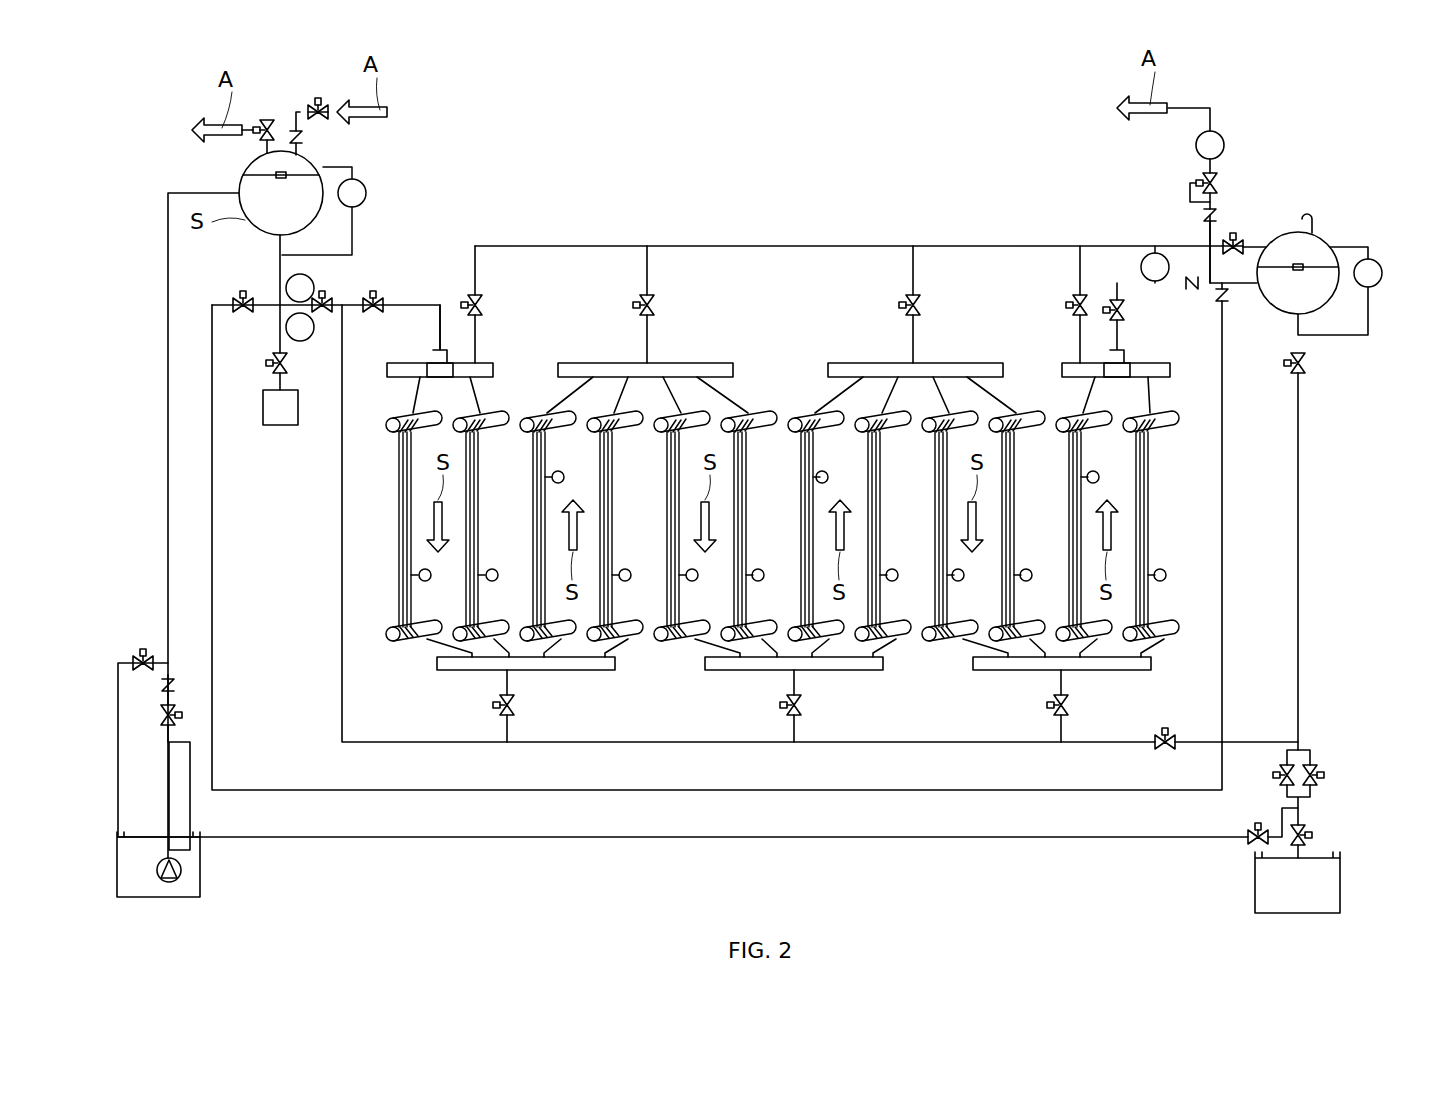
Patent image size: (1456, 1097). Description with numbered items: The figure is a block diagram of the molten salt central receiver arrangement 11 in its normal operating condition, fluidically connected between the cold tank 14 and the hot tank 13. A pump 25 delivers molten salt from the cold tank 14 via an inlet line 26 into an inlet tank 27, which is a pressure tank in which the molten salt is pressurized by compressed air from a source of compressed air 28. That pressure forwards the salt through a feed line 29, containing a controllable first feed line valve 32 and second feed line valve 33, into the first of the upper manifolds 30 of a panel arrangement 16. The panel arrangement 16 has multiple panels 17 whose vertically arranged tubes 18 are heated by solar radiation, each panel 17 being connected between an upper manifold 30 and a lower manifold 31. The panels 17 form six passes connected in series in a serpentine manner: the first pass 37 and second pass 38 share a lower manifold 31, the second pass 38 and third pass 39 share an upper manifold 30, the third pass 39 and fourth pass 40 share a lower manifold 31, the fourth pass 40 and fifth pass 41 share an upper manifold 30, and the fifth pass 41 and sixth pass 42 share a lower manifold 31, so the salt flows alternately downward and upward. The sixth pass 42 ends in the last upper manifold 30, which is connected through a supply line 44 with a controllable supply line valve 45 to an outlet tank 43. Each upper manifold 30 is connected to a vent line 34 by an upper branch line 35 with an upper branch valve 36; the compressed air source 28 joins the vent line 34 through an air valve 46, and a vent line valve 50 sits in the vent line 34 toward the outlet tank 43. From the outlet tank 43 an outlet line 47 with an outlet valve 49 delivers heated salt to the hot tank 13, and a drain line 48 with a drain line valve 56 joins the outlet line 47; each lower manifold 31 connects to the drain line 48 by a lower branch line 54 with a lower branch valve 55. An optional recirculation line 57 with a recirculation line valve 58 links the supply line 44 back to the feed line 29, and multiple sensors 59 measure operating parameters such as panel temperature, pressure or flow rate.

The molten salt central receiver arrangement 11 is at (1310, 94).
The hot tank 13 is at (1340, 886).
The cold tank 14 is at (200, 870).
The panel arrangement 16 is at (277, 434).
The panel 17 is at (1149, 500).
The tube 18 is at (1150, 470).
The pump 25 is at (156, 870).
The inlet line 26 is at (168, 434).
The inlet tank 27 is at (240, 180).
The source of compressed air 28 is at (1226, 146).
The feed line 29 is at (440, 300).
The upper manifold 30 is at (520, 340).
The lower manifold 31 is at (592, 670).
The first feed line valve 32 is at (290, 364).
The second feed line valve 33 is at (373, 314).
The vent line 34 is at (873, 246).
The upper branch line 35 is at (477, 268).
The upper branch valve 36 is at (484, 302).
The first pass 37 is at (422, 653).
The second pass 38 is at (628, 646).
The third pass 39 is at (697, 653).
The fourth pass 40 is at (898, 646).
The fifth pass 41 is at (966, 653).
The sixth pass 42 is at (1186, 575).
The outlet tank 43 is at (1318, 240).
The supply line 44 is at (1206, 266).
The supply line valve 45 is at (1126, 310).
The air valve 46 is at (1220, 183).
The outlet line 47 is at (1300, 553).
The drain line 48 is at (1258, 742).
The outlet valve 49 is at (1308, 364).
The vent line valve 50 is at (1238, 240).
The lower branch line 54 is at (509, 725).
The lower branch valve 55 is at (495, 706).
The drain line valve 56 is at (1175, 738).
The recirculation line 57 is at (342, 744).
The recirculation line valve 58 is at (243, 298).
The sensor 59 is at (367, 193).